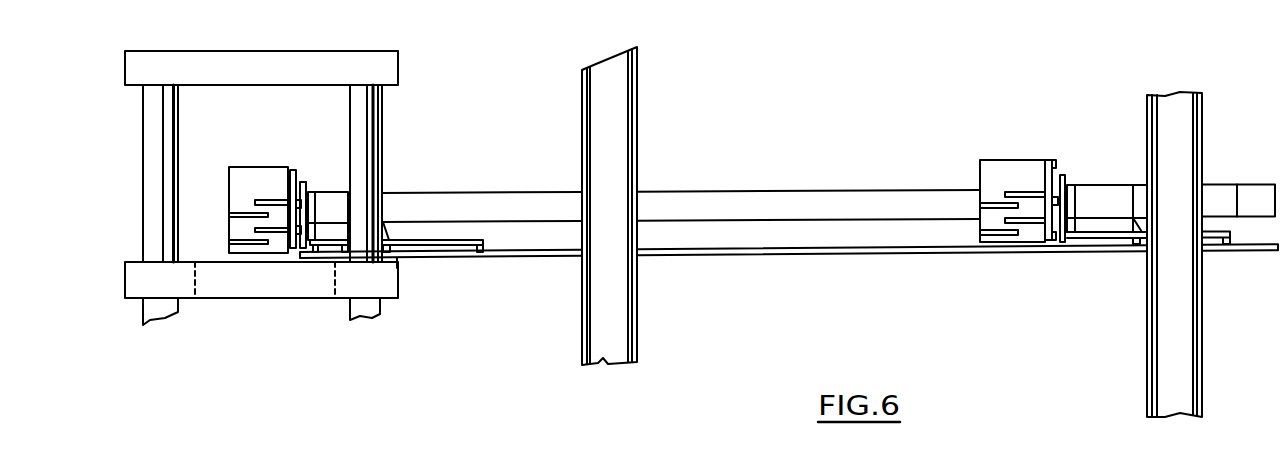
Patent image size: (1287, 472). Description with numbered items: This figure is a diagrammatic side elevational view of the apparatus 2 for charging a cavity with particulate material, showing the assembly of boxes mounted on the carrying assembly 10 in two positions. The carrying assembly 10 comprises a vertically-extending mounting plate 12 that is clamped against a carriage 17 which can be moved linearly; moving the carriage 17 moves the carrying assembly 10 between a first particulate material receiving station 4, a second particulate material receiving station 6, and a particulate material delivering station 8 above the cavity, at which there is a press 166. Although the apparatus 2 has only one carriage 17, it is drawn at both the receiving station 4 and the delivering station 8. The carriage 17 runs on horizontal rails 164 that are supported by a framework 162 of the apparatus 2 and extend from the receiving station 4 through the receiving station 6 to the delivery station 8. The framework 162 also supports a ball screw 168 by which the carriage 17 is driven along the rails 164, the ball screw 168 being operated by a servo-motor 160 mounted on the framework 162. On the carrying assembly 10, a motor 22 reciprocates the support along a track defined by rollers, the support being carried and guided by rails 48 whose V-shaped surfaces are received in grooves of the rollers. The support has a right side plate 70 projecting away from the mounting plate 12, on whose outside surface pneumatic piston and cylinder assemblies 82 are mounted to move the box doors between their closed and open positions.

The apparatus 2 is at (1212, 125).
The first particulate material receiving station 4 is at (1018, 122).
The second particulate material receiving station 6 is at (781, 165).
The particulate material delivering station 8 is at (337, 158).
The carrying assembly 10 is at (283, 137).
The mounting plate 12 is at (1066, 178).
The carriage 17 is at (342, 237).
The motor 22 is at (333, 198).
The rail 48 is at (1057, 176).
The right side plate 70 is at (1002, 175).
The pneumatic piston and cylinder assembly 82 is at (242, 205).
The servo-motor 160 is at (1252, 189).
The framework 162 is at (598, 323).
The horizontal rail 164 is at (660, 253).
The press 166 is at (367, 160).
The ball screw 168 is at (846, 194).